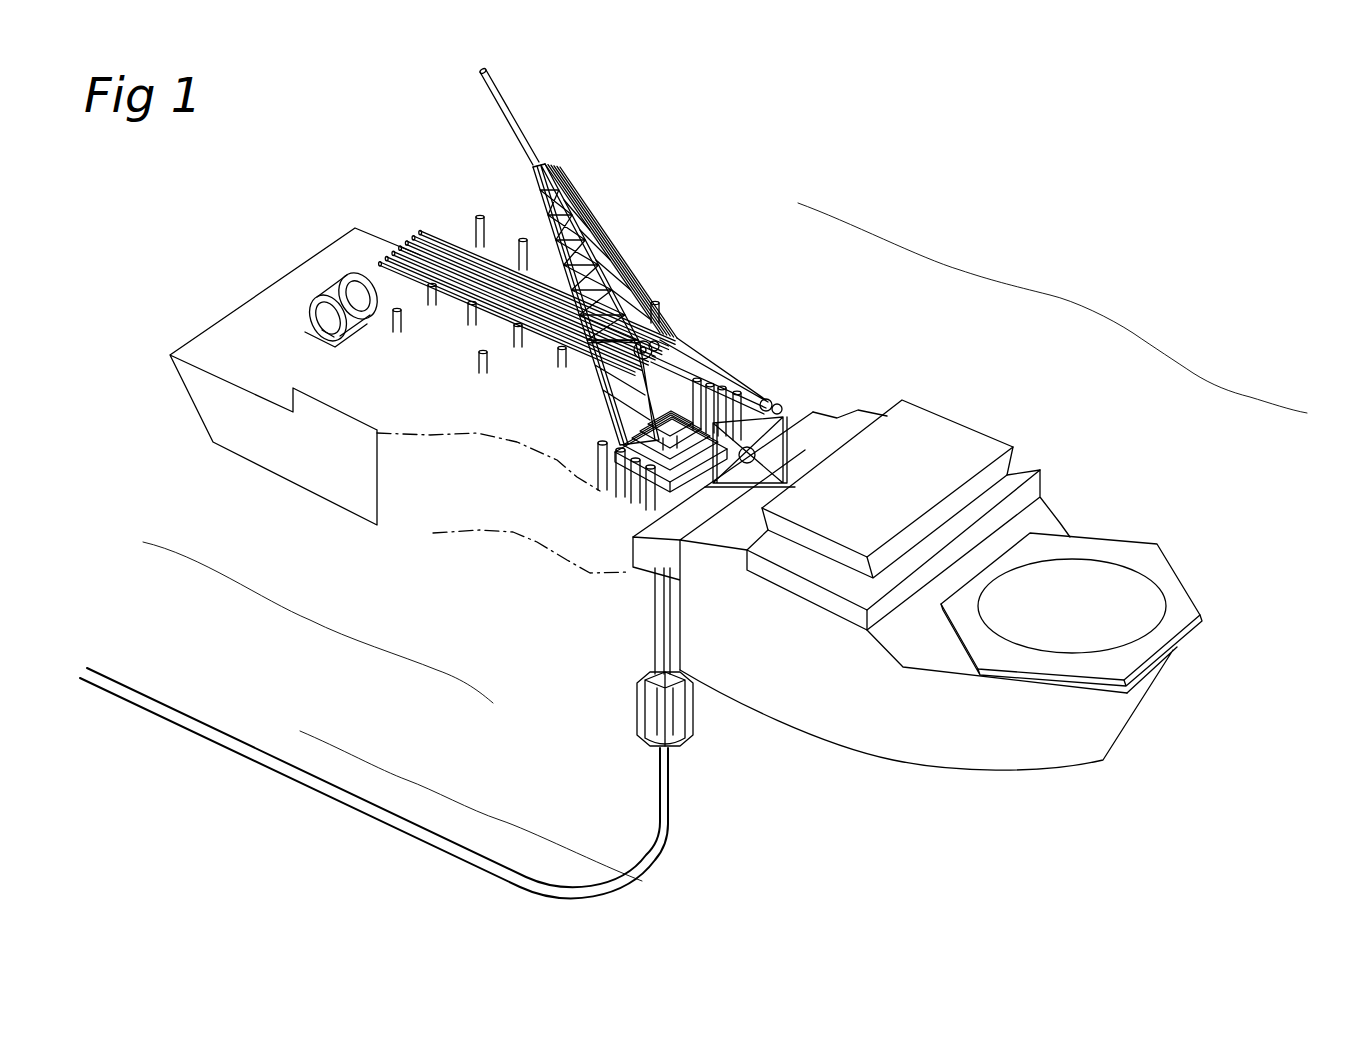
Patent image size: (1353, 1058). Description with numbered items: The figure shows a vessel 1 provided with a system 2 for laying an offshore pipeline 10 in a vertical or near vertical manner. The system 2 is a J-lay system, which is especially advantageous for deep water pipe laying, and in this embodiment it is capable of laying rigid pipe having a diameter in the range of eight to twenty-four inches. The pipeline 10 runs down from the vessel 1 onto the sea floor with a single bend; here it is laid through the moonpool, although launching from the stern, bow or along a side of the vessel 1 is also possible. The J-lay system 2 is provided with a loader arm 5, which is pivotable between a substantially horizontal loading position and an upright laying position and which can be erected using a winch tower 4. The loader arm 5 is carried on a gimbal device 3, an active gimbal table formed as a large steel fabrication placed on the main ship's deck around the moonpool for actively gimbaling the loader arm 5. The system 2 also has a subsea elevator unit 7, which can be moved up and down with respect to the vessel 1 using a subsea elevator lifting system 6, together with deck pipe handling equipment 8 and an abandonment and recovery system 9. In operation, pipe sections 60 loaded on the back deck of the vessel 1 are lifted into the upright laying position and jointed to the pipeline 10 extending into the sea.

The vessel 1 is at (978, 413).
The system 2 is at (610, 177).
The gimbal device 3 is at (632, 537).
The winch tower 4 is at (780, 400).
The loader arm 5 is at (643, 290).
The subsea elevator lifting system 6 is at (575, 478).
The subsea elevator unit 7 is at (626, 725).
The deck pipe handling equipment 8 is at (430, 215).
The abandonment and recovery system 9 is at (323, 283).
The pipeline 10 is at (683, 765).
The pipe sections 60 is at (504, 116).